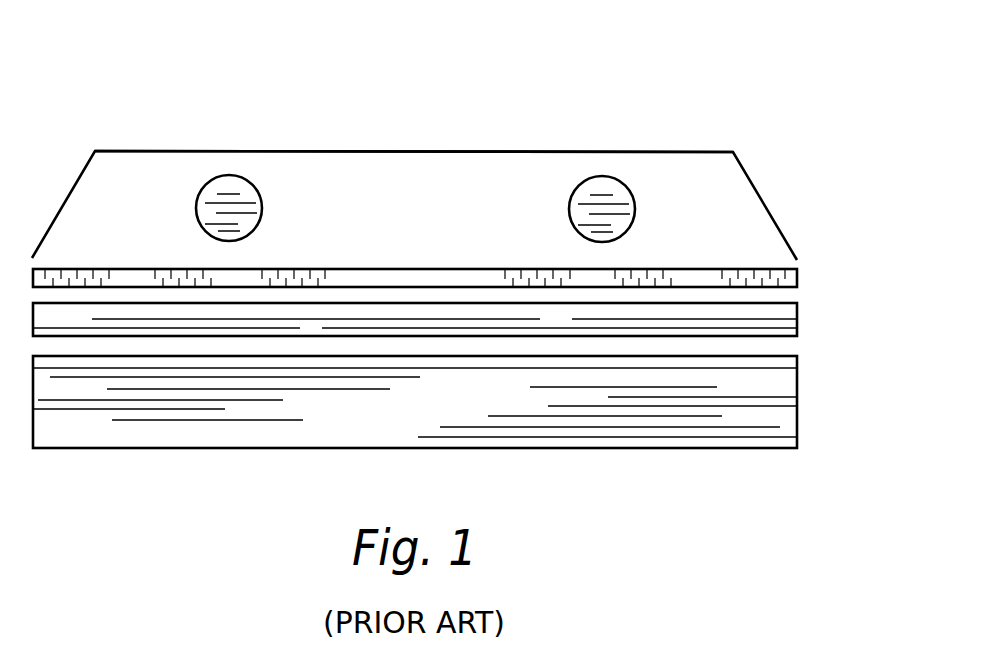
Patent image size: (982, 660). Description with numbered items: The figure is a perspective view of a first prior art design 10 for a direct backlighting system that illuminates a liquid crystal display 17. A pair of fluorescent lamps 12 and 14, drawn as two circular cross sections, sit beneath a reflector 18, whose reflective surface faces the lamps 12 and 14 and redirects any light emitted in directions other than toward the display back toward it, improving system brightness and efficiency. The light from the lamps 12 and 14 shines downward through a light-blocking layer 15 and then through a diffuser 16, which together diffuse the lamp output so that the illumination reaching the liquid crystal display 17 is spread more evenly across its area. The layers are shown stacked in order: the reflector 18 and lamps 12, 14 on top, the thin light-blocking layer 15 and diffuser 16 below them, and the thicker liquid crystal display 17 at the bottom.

The first prior art design 10 is at (675, 105).
The fluorescent lamp 12 is at (215, 203).
The fluorescent lamp 14 is at (585, 203).
The light-blocking layer 15 is at (799, 278).
The diffuser 16 is at (797, 322).
The liquid crystal display 17 is at (178, 447).
The reflector 18 is at (380, 151).